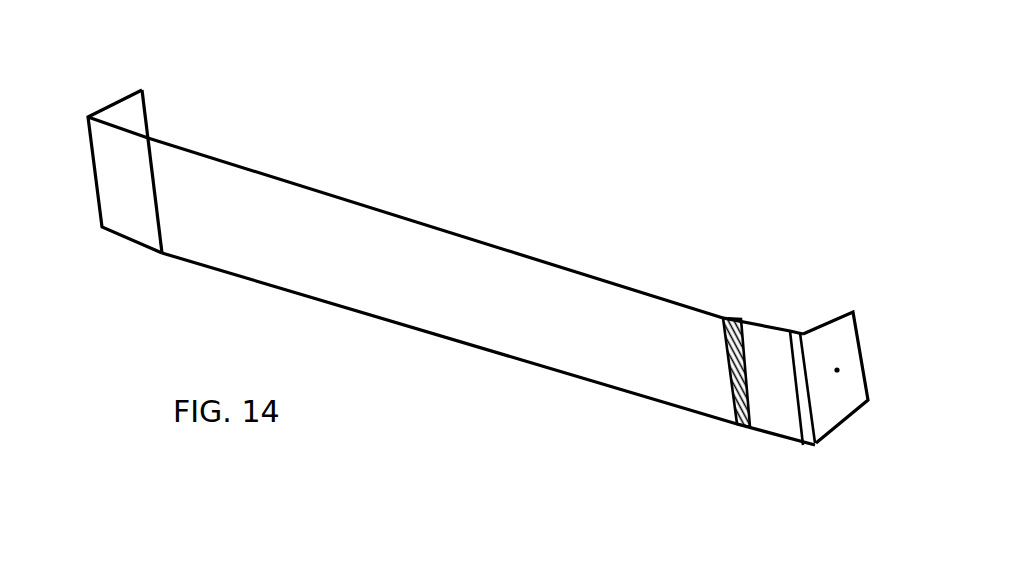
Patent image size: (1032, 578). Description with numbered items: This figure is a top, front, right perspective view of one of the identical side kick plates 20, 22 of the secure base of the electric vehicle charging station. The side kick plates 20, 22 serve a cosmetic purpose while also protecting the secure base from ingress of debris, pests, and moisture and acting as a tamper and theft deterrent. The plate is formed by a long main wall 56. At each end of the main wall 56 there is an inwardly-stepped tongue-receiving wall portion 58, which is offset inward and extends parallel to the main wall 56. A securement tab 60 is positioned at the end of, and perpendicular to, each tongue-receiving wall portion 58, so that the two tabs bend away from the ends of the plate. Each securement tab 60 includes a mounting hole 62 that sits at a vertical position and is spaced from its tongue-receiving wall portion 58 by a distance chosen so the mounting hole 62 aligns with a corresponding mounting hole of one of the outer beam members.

The side kick plate 20 is at (479, 272).
The side kick plate 22 is at (403, 170).
The main wall 56 is at (492, 312).
The inwardly-stepped tongue-receiving wall portion 58 is at (120, 158).
The securement tab 60 is at (137, 106).
The mounting hole 62 is at (840, 371).